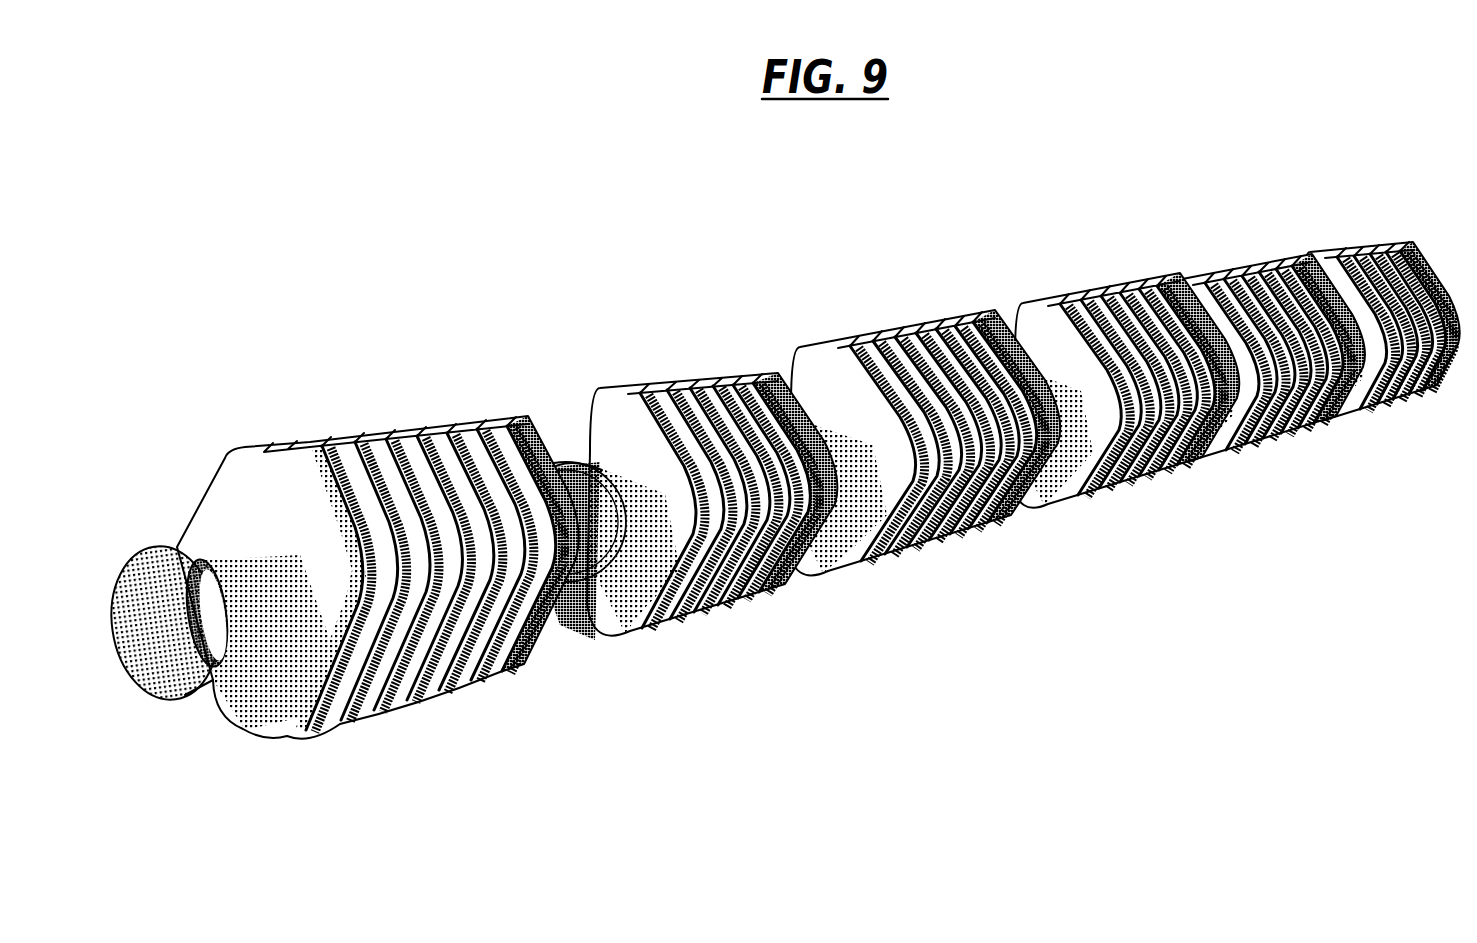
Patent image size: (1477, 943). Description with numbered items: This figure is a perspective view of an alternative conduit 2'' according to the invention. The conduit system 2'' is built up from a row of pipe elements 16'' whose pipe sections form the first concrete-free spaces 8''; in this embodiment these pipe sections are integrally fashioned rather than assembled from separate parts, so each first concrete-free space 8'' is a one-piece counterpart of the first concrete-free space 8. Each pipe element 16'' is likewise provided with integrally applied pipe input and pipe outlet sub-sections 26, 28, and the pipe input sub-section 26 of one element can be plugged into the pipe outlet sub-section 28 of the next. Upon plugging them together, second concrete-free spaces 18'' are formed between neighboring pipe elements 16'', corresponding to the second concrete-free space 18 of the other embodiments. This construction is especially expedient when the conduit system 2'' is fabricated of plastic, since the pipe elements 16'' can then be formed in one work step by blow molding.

The conduit 2'' is at (781, 530).
The body segment 8 is at (378, 617).
The first concrete-free spaces 8'' is at (442, 594).
The pipe elements 16'' is at (924, 485).
The neck 18 is at (599, 605).
The second concrete-free spaces 18'' is at (601, 404).
The pipe input sub-section 26 is at (556, 500).
The pipe outlet sub-section 28 is at (285, 745).